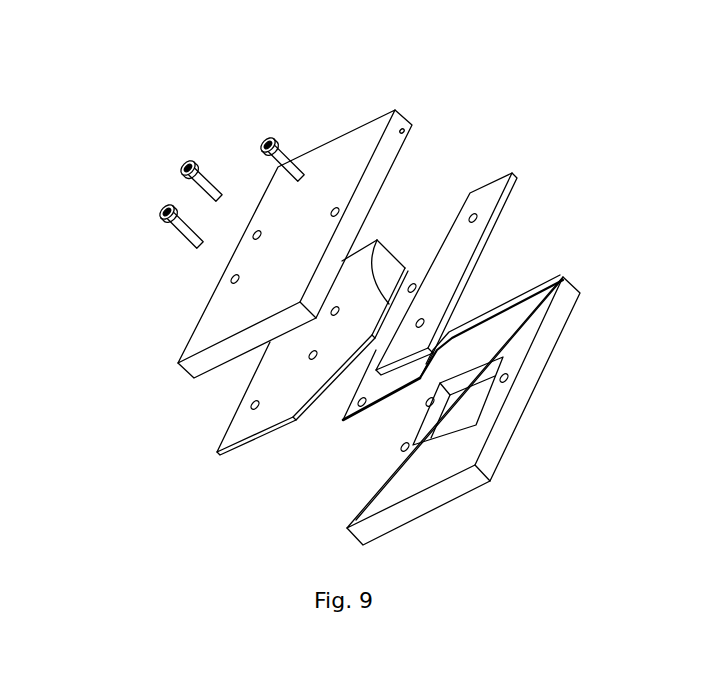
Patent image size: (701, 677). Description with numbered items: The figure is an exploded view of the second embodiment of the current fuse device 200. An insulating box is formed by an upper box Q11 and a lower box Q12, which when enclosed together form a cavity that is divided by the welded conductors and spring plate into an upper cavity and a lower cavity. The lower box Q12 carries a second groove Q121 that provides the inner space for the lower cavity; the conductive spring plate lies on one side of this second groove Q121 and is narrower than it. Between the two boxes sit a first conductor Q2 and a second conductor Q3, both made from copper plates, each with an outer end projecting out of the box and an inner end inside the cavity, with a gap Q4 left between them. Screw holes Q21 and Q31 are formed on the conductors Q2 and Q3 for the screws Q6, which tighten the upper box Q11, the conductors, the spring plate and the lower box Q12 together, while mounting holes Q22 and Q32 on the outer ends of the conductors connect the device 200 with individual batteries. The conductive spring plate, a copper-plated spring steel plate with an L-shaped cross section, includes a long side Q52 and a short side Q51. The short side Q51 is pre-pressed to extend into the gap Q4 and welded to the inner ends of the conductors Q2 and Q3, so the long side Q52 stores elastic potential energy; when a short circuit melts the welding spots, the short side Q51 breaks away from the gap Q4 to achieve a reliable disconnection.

The current fuse device 200 is at (125, 113).
The upper box Q11 is at (345, 150).
The screws Q6 is at (188, 180).
The first conductor Q2 is at (281, 375).
The screw hole Q21 is at (307, 357).
The mounting hole Q22 is at (252, 408).
The gap Q4 is at (380, 240).
The second conductor Q3 is at (485, 235).
The screw hole Q31 is at (414, 283).
The mounting hole Q32 is at (473, 213).
The short side Q51 is at (446, 340).
The long side Q52 is at (356, 425).
The lower box Q12 is at (489, 411).
The second groove Q121 is at (460, 418).